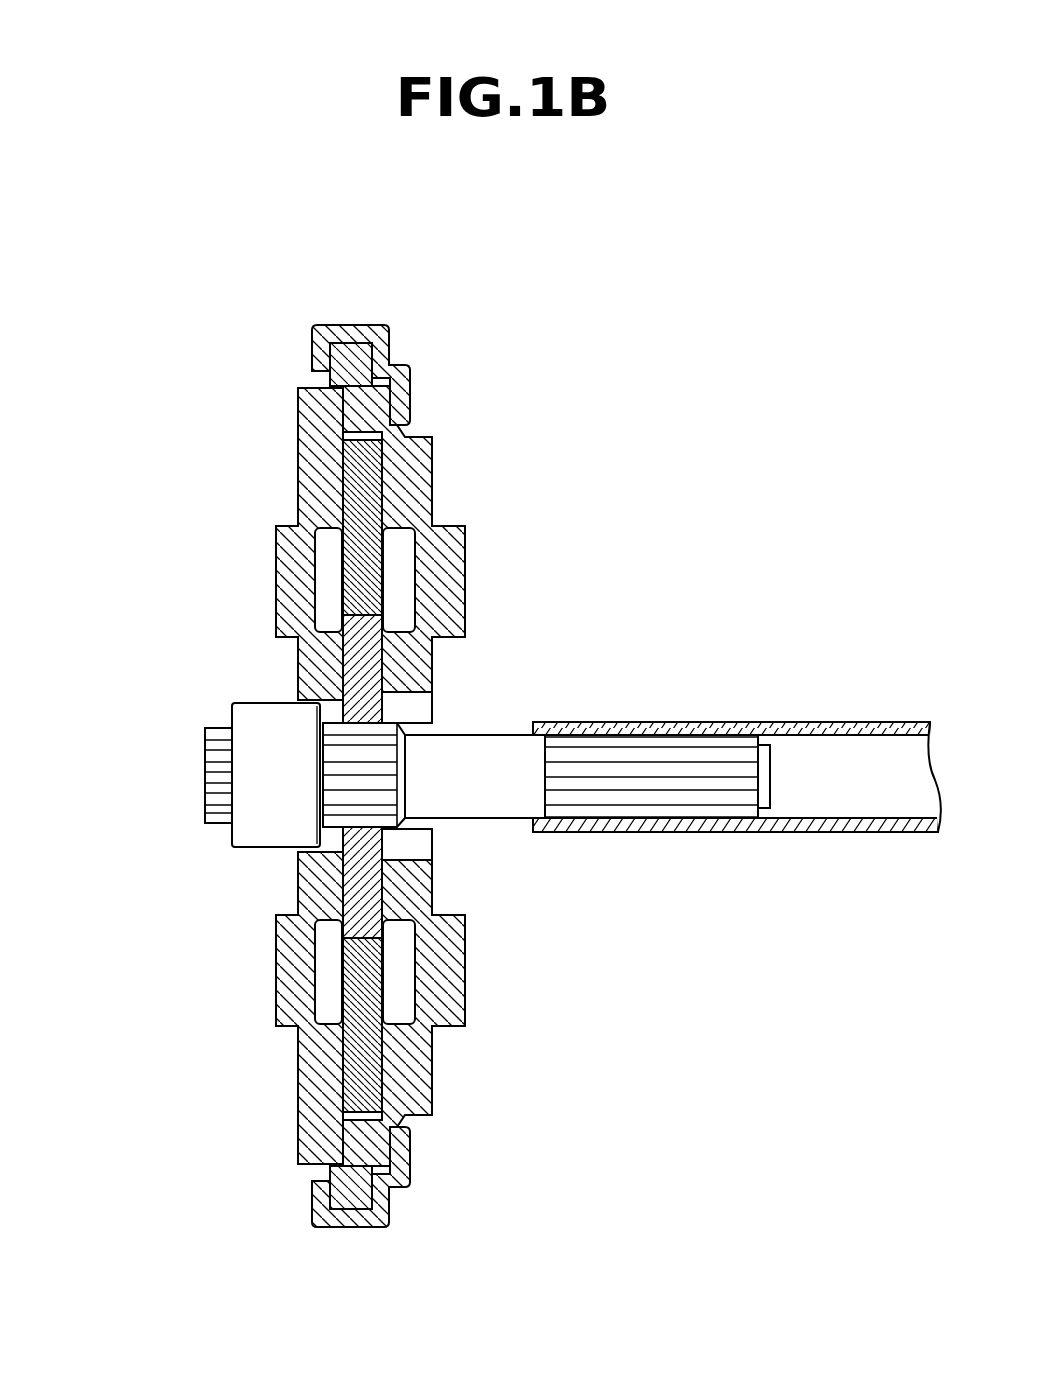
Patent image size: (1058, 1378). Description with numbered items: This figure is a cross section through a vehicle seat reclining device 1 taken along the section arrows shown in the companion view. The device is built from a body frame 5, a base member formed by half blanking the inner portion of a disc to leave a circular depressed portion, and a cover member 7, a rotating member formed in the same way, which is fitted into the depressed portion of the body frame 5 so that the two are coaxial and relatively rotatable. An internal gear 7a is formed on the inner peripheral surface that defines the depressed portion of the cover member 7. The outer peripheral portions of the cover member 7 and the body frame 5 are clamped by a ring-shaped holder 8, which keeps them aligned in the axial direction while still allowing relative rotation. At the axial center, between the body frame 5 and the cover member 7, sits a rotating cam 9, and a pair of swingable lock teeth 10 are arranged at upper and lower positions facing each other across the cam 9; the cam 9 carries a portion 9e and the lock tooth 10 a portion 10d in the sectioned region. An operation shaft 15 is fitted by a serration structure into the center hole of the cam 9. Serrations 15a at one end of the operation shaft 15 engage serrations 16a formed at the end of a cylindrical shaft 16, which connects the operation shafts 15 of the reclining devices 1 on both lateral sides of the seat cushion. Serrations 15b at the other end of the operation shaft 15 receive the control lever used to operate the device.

The vehicle seat reclining device 1 is at (158, 682).
The body frame 5 is at (312, 460).
The cover member 7 is at (433, 462).
The internal gear 7a is at (363, 1112).
The ring-shaped holder 8 is at (390, 338).
The cam 9 is at (345, 903).
The gear 9e is at (365, 820).
The lock tooth 10 is at (345, 1068).
The lower cap 10d is at (350, 1118).
The operation shaft 15 is at (497, 812).
The serrations 15a is at (588, 778).
The serrations 15b is at (218, 727).
The cylindrical shaft 16 is at (797, 728).
The serrations 16a is at (648, 812).